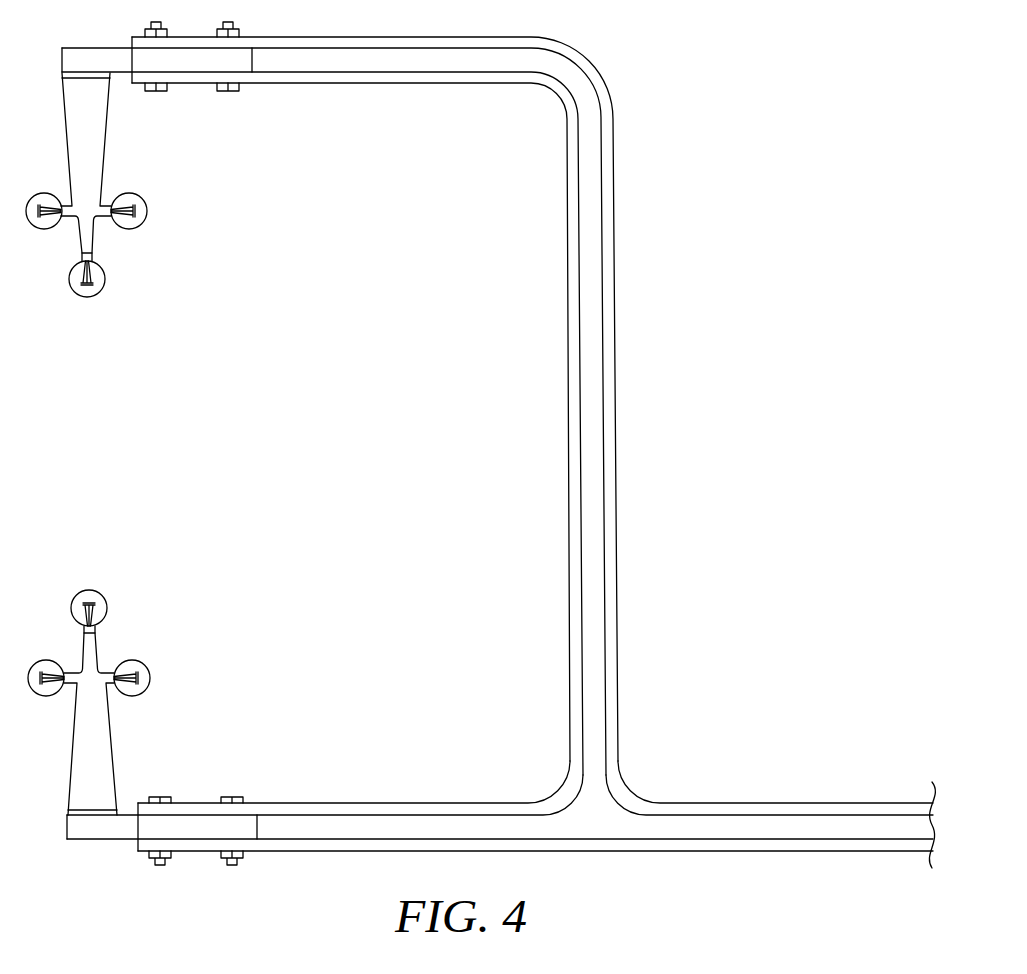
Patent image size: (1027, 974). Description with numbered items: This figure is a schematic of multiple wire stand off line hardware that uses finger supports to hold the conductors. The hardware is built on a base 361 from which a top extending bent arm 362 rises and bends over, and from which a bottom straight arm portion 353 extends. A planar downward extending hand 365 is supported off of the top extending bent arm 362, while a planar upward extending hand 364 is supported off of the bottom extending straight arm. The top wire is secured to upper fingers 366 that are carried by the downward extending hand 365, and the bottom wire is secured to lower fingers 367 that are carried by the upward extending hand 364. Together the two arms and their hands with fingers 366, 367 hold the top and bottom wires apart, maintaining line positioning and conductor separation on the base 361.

The bottom horizontal tube section 353 is at (327, 803).
The base 361 is at (762, 803).
The top extending bent arm 362 is at (615, 327).
The planar upward extending hand 364 is at (108, 745).
The planar downward extending hand 365 is at (106, 125).
The upper fingers 366 is at (139, 224).
The lower fingers 367 is at (139, 661).